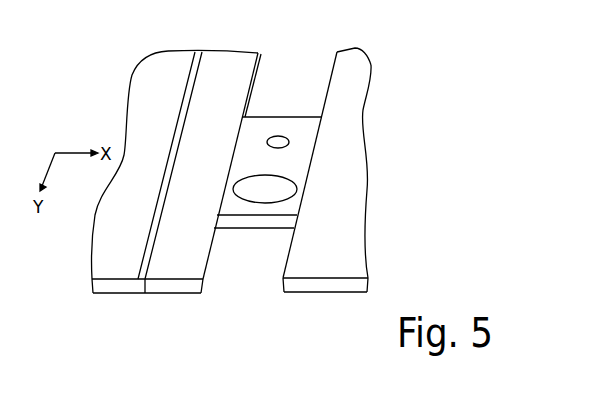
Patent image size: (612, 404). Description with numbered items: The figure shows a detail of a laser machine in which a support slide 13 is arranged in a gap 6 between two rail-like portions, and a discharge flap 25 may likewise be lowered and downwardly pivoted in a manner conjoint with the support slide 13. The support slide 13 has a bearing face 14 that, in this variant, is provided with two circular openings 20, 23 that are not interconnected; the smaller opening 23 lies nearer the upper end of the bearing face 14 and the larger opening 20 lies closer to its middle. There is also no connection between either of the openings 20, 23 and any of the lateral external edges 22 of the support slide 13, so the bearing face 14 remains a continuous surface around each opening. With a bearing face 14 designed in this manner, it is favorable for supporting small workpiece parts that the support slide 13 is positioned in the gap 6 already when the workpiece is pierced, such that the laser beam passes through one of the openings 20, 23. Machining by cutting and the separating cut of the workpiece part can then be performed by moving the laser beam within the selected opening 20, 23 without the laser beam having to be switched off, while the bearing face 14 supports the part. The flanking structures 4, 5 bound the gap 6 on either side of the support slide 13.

The first rail block 4 is at (117, 268).
The discharge flap 25 is at (173, 268).
The support slide 13 is at (295, 114).
The circular opening 23 is at (280, 135).
The circular opening 20 is at (276, 188).
The bearing face 14 is at (237, 207).
The lateral external edge 22 is at (258, 218).
The second rail block 5 is at (312, 265).
The gap 6 is at (320, 68).